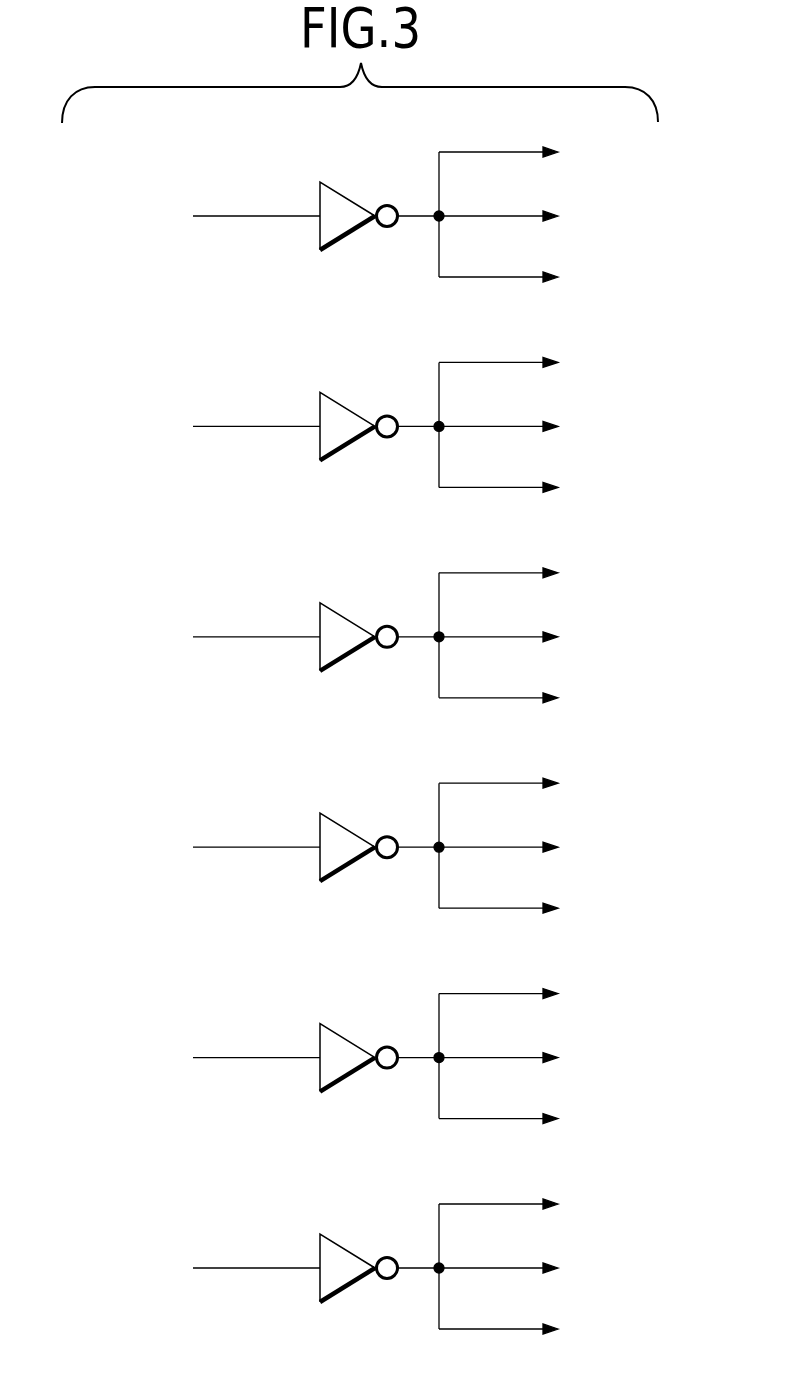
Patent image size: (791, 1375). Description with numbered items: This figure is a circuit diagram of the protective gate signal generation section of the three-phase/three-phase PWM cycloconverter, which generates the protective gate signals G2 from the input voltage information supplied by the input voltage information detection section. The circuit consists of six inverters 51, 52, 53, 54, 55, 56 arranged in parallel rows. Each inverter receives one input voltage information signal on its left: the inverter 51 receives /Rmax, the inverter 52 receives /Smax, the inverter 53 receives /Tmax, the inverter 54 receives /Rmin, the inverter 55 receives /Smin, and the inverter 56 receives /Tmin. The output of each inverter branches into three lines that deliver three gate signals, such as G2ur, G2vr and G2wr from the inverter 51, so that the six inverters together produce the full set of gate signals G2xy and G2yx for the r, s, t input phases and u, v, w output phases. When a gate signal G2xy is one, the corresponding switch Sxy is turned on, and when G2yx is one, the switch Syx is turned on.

The inverter 51 is at (342, 196).
The inverter 52 is at (342, 406).
The inverter 53 is at (342, 617).
The inverter 54 is at (342, 827).
The inverter 55 is at (342, 1038).
The inverter 56 is at (342, 1248).